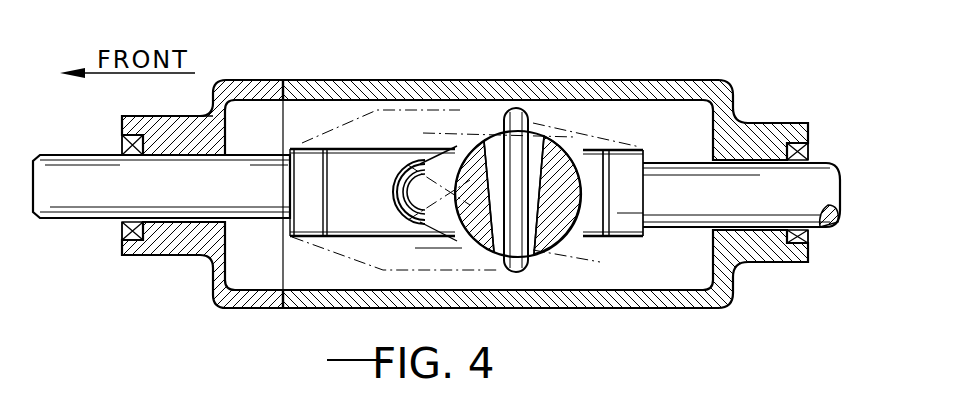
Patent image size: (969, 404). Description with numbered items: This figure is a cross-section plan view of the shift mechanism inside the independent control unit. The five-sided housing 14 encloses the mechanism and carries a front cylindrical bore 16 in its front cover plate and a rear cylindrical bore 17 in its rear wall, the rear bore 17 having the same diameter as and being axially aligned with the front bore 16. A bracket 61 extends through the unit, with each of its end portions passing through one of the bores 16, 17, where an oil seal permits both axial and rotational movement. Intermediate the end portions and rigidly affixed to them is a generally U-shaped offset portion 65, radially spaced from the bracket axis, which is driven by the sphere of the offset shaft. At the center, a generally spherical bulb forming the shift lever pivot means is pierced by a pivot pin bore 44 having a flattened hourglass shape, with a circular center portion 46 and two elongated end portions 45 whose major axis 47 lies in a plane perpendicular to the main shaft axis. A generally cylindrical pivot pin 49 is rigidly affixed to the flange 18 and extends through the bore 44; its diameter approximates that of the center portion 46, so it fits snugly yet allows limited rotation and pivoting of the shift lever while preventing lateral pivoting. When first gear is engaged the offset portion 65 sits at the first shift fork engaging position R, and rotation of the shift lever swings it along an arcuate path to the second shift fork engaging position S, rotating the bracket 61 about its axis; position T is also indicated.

The housing 14 is at (397, 76).
The front cylindrical bore 16 is at (167, 222).
The rear cylindrical bore 17 is at (757, 226).
The flange 18 is at (578, 173).
The pivot pin bore 44 is at (541, 145).
The end portions 45 is at (503, 118).
The center portion 46 is at (506, 192).
The major axis 47 is at (457, 130).
The pivot pin 49 is at (528, 247).
The bracket 61 is at (660, 152).
The offset portion 65 is at (592, 222).
The first shift fork engaging position R is at (339, 121).
The second shift fork engaging position S is at (392, 186).
The reference plane T is at (404, 223).